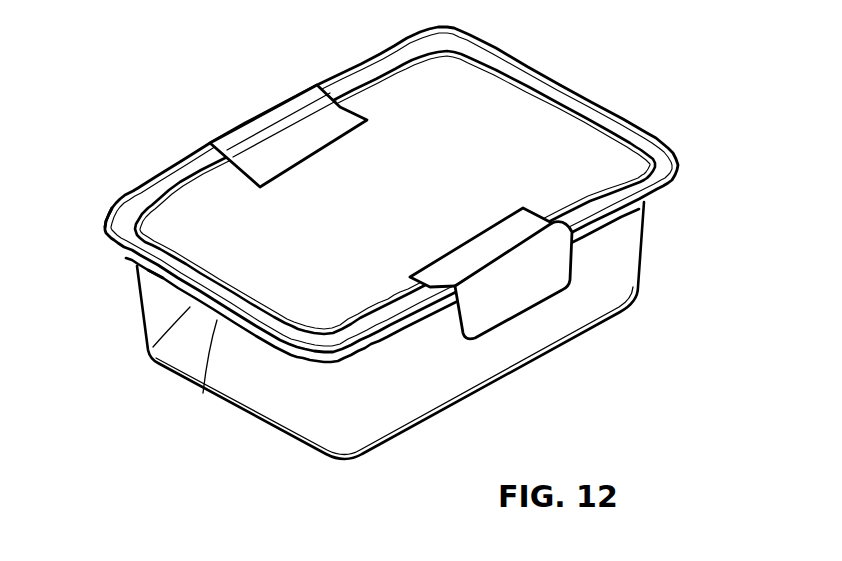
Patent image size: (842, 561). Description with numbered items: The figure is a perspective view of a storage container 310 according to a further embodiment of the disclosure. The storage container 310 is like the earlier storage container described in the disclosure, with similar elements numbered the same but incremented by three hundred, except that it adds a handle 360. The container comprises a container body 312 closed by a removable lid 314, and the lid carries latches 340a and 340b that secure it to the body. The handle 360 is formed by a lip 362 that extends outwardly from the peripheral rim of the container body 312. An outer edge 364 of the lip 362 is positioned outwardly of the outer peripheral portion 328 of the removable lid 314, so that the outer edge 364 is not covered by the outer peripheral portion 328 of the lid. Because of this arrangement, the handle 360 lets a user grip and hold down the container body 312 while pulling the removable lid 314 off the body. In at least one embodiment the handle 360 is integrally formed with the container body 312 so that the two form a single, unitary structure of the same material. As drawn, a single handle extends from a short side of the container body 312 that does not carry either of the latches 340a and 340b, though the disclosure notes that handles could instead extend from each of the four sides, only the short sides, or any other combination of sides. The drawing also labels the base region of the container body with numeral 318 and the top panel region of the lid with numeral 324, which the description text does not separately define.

The storage container 310 is at (673, 58).
The container body 312 is at (498, 383).
The removable lid 314 is at (581, 78).
The base of container body 318 is at (293, 408).
The recessed top panel of lid 324 is at (591, 186).
The outer peripheral portion 328 is at (103, 238).
The latch 340a is at (532, 308).
The latch 340b is at (266, 104).
The handle 360 is at (170, 293).
The lip 362 is at (153, 347).
The outer edge 364 is at (203, 393).